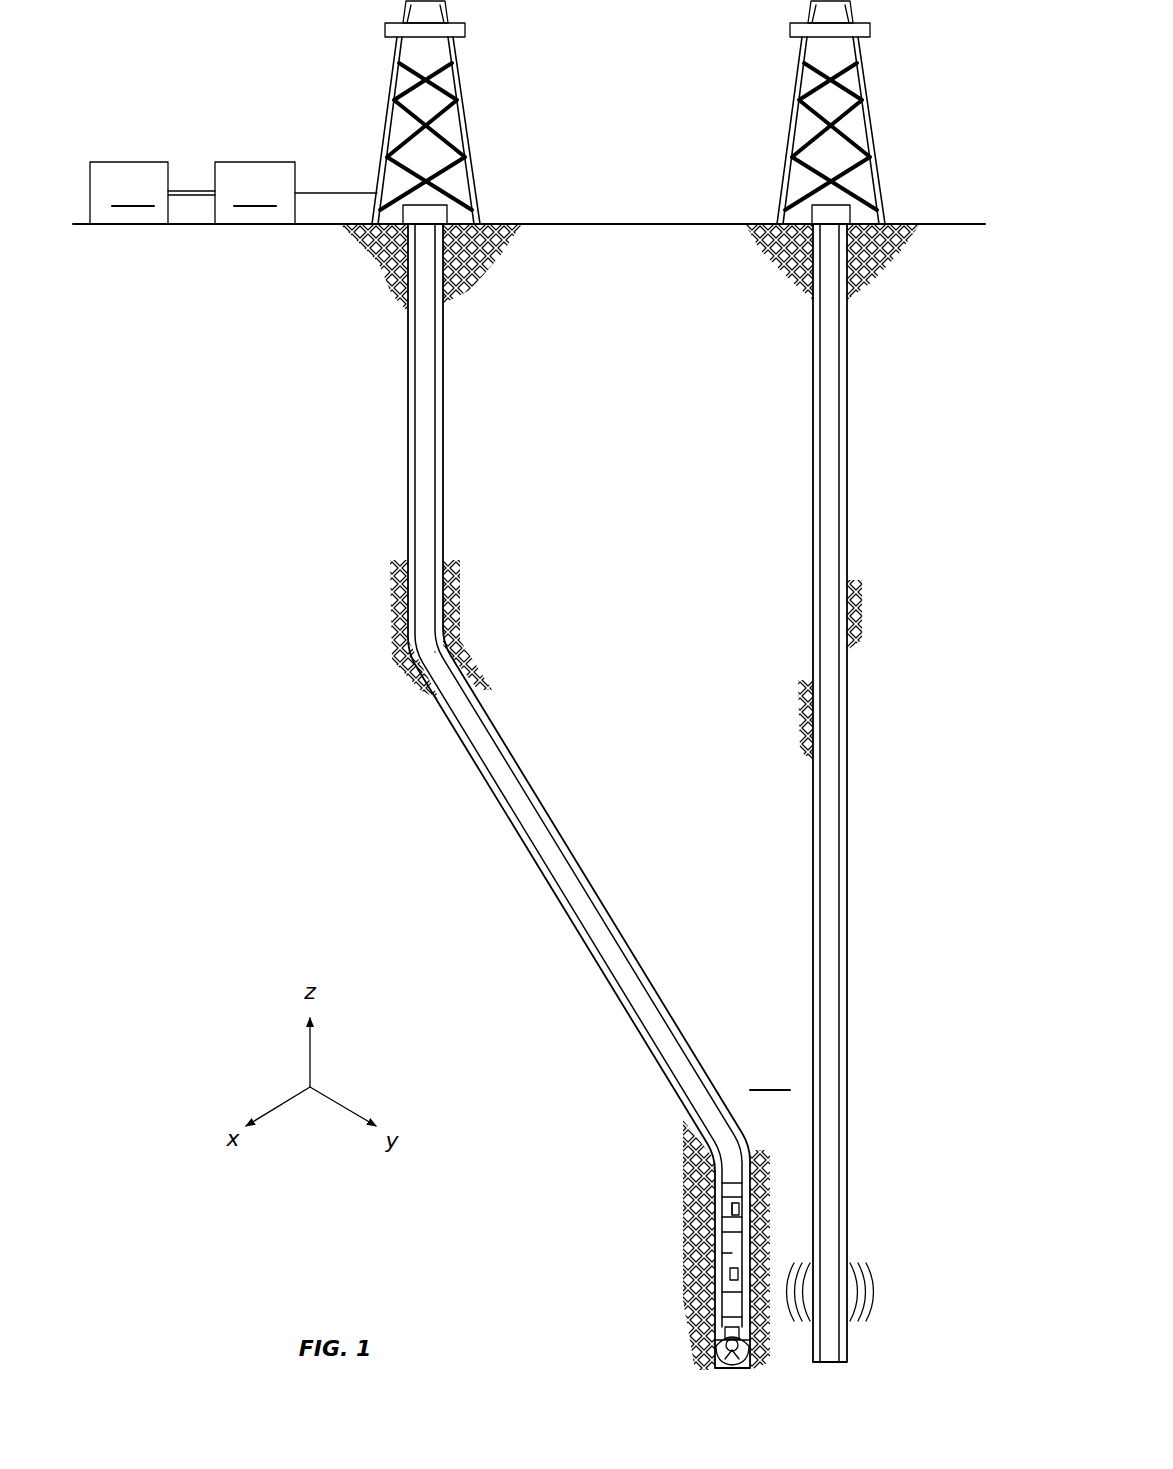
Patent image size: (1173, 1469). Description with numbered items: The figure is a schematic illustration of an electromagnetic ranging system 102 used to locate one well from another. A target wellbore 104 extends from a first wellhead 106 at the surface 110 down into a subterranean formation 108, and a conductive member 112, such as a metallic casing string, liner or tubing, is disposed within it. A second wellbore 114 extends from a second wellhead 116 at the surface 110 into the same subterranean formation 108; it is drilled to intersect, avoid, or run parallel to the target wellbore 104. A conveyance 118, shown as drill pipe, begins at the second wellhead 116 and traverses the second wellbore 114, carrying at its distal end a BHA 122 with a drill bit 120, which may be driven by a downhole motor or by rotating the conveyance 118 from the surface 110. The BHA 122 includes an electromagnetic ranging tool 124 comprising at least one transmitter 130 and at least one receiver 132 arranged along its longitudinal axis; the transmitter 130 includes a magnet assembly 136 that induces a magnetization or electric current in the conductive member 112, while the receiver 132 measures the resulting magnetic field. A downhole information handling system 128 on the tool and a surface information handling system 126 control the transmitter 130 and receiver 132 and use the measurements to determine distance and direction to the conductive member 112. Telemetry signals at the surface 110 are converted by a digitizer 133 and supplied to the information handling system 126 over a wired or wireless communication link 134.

The electromagnetic ranging system 102 is at (405, 834).
The target wellbore 104 is at (856, 413).
The first wellhead 106 is at (878, 206).
The subterranean formation 108 is at (811, 1193).
The surface 110 is at (650, 223).
The conductive member 112 is at (848, 828).
The second wellbore 114 is at (416, 519).
The second wellhead 116 is at (470, 196).
The conveyance 118 is at (400, 433).
The drill bit 120 is at (458, 725).
The BHA 122 is at (697, 1243).
The electromagnetic ranging tool 124 is at (717, 1233).
The information handling system 126 is at (129, 193).
The downhole information handling system 128 is at (716, 1189).
The transmitter 130 is at (730, 1212).
The receiver 132 is at (732, 1253).
The digitizer 133 is at (296, 193).
The communication link 134 is at (195, 190).
The magnet assembly 136 is at (740, 1210).